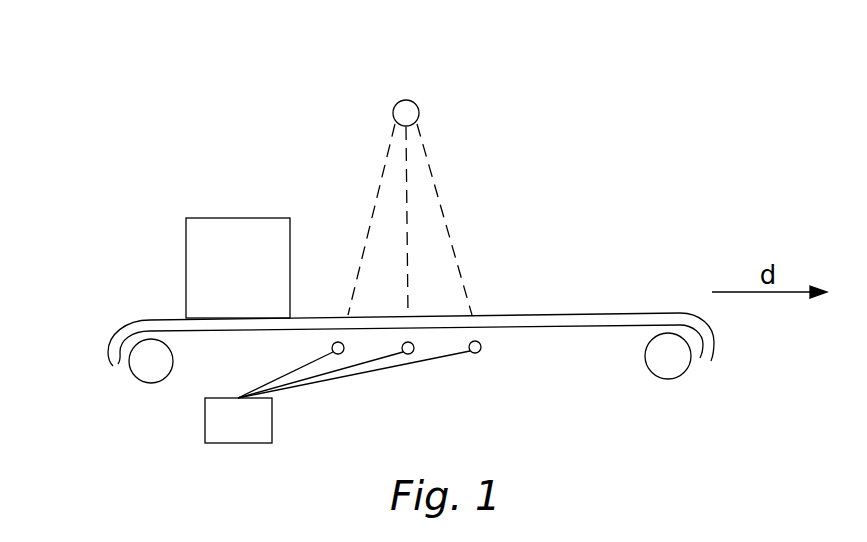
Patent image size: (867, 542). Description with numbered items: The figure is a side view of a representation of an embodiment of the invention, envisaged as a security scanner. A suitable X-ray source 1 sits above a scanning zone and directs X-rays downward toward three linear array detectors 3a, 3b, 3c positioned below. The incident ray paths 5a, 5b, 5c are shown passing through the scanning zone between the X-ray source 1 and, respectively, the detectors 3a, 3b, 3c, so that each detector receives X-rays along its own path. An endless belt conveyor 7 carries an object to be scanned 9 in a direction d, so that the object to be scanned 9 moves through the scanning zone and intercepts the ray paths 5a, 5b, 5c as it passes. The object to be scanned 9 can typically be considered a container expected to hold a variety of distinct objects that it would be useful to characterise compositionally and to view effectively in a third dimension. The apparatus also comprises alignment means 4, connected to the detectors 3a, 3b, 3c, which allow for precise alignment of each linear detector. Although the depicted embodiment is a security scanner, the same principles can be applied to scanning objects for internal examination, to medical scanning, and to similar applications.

The X-ray source 1 is at (402, 104).
The linear array detector 3a is at (336, 355).
The linear array detector 3b is at (406, 355).
The linear array detector 3c is at (473, 355).
The alignment means 4 is at (232, 435).
The incident ray path 5a is at (380, 170).
The incident ray path 5b is at (408, 185).
The incident ray path 5c is at (460, 263).
The endless belt conveyor 7 is at (123, 328).
The object to be scanned 9 is at (223, 238).